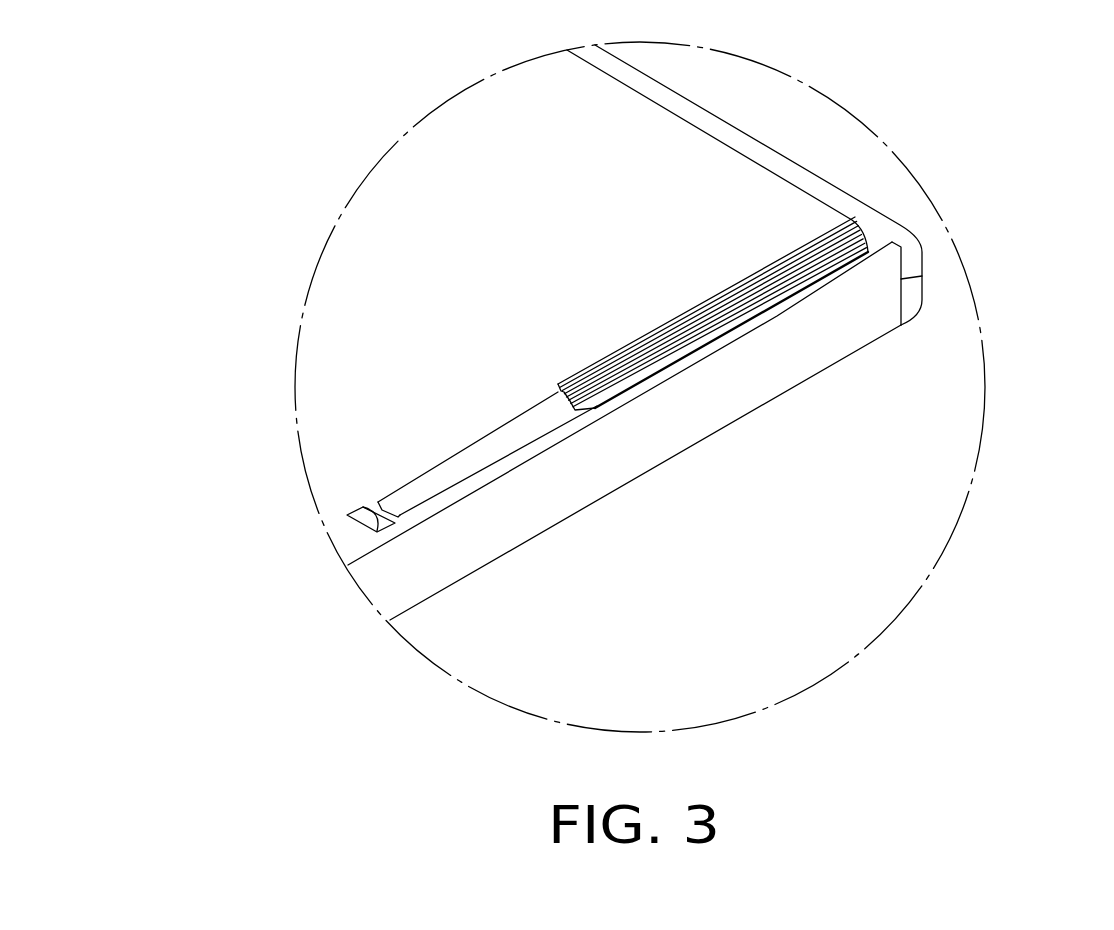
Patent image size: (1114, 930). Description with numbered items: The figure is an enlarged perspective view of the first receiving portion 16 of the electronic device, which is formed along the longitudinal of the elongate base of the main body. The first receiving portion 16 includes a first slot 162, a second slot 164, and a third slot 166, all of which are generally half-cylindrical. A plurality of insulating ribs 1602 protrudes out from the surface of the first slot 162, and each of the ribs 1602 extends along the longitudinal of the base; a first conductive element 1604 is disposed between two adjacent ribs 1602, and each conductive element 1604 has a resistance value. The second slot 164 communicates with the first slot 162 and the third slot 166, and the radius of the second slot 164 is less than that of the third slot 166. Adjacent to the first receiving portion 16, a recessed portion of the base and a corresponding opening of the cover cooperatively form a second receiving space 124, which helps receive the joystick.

The second receiving space 124 is at (798, 177).
The first receiving portion 16 is at (631, 445).
The first slot 162 is at (623, 397).
The second slot 164 is at (300, 504).
The third slot 166 is at (365, 522).
The insulating ribs 1602 is at (733, 322).
The first conductive element 1604 is at (794, 278).